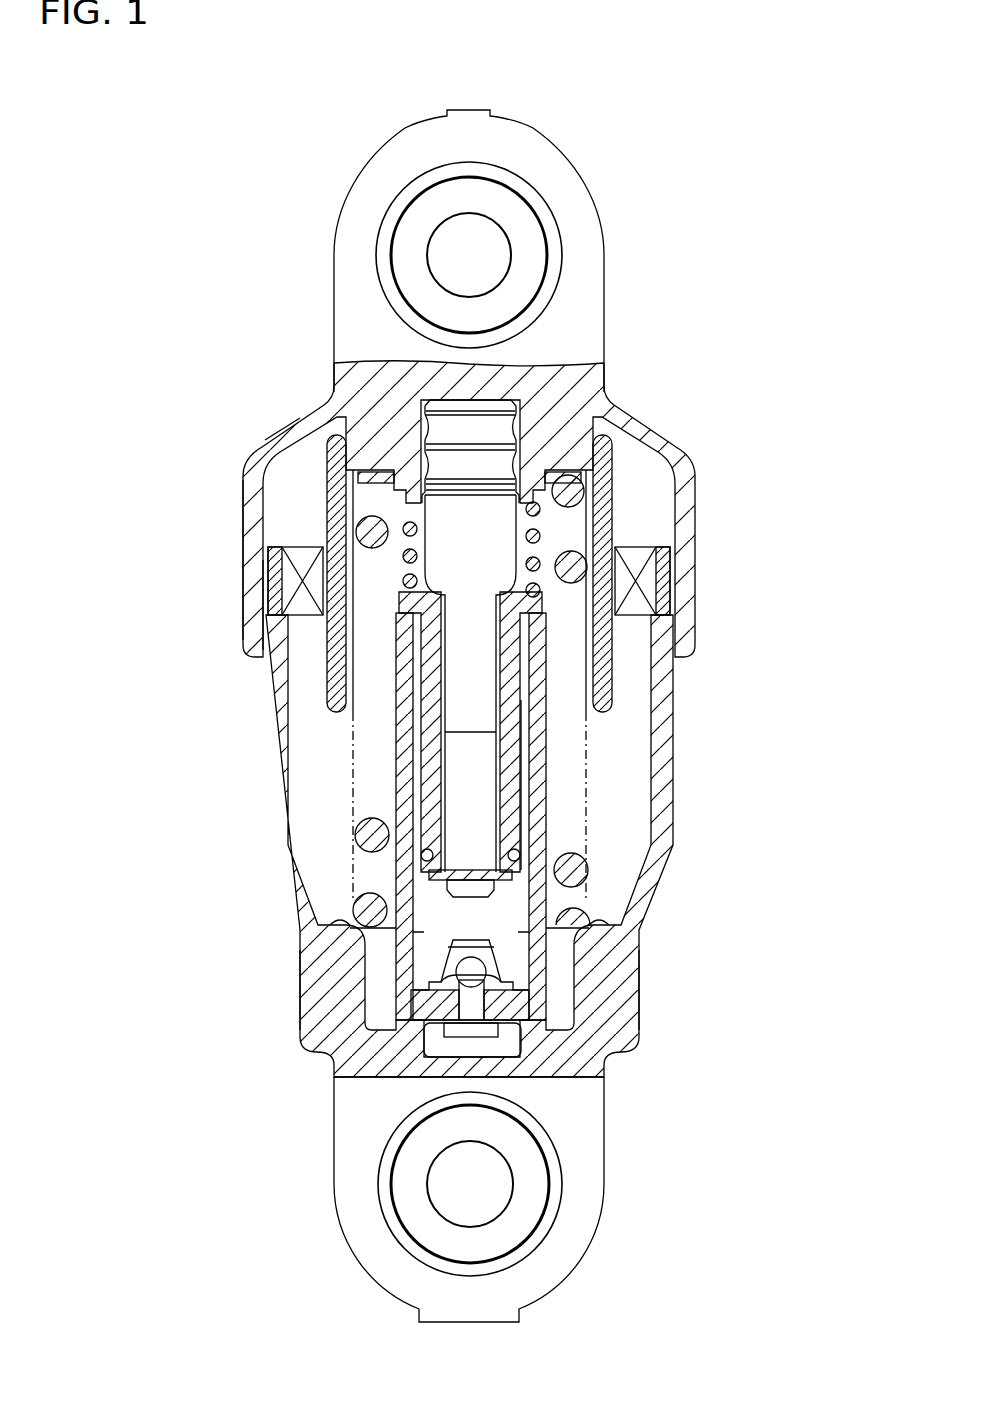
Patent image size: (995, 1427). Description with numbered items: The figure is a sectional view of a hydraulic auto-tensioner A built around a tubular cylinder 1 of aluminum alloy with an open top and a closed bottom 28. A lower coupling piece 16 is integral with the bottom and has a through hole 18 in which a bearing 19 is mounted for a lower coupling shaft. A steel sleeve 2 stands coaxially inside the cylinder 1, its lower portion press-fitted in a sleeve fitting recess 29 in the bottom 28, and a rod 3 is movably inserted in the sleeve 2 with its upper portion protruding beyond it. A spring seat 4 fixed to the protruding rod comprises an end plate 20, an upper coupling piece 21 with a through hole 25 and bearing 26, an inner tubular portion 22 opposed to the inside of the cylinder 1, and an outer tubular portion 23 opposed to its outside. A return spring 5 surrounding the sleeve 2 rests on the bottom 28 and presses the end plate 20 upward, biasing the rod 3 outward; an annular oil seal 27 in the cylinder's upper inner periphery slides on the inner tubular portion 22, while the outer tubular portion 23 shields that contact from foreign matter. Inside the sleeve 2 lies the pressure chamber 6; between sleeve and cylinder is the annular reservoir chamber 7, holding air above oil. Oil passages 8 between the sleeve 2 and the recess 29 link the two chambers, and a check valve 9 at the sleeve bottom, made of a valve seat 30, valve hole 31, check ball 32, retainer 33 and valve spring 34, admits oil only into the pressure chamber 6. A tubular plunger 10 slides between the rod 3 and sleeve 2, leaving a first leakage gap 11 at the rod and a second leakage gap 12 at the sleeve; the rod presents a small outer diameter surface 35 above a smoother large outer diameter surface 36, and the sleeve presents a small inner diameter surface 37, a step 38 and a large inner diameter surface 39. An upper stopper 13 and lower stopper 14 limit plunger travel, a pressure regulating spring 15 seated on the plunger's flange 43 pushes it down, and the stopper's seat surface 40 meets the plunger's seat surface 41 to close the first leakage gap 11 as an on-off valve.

The cylinder 1 is at (275, 768).
The sleeve 2 is at (401, 677).
The rod 3 is at (360, 848).
The spring seat 4 is at (331, 268).
The return spring 5 is at (386, 858).
The pressure chamber 6 is at (393, 933).
The reservoir chamber 7 is at (292, 905).
The oil passages 8 is at (333, 1068).
The check valve 9 is at (486, 968).
The tubular plunger 10 is at (416, 622).
The first leakage gap 11 is at (453, 793).
The second leakage gap 12 is at (429, 712).
The upper stopper 13 is at (483, 510).
The lower stopper 14 is at (525, 895).
The pressure regulating spring 15 is at (549, 512).
The lower coupling piece 16 is at (348, 1198).
The through hole 18 is at (556, 1160).
The bearing 19 is at (533, 1197).
The end plate 20 is at (327, 395).
The upper coupling piece 21 is at (346, 215).
The inner tubular portion 22 is at (320, 474).
The outer tubular portion 23 is at (252, 583).
The through hole 25 is at (556, 232).
The bearing 26 is at (538, 268).
The oil seal 27 is at (303, 553).
The bottom 28 is at (335, 936).
The sleeve fitting recess 29 is at (377, 1018).
The valve seat 30 is at (345, 1072).
The valve hole 31 is at (410, 1005).
The check ball 32 is at (558, 1035).
The retainer 33 is at (506, 950).
The valve spring 34 is at (478, 988).
The small outer diameter surface 35 is at (488, 663).
The large outer diameter surface 36 is at (545, 757).
The small inner diameter surface 37 is at (547, 713).
The step 38 is at (493, 785).
The large inner diameter surface 39 is at (550, 815).
The seat surface 40 is at (600, 628).
The seat surface 41 is at (438, 593).
The flange 43 is at (615, 565).
The hydraulic auto-tensioner A is at (275, 422).